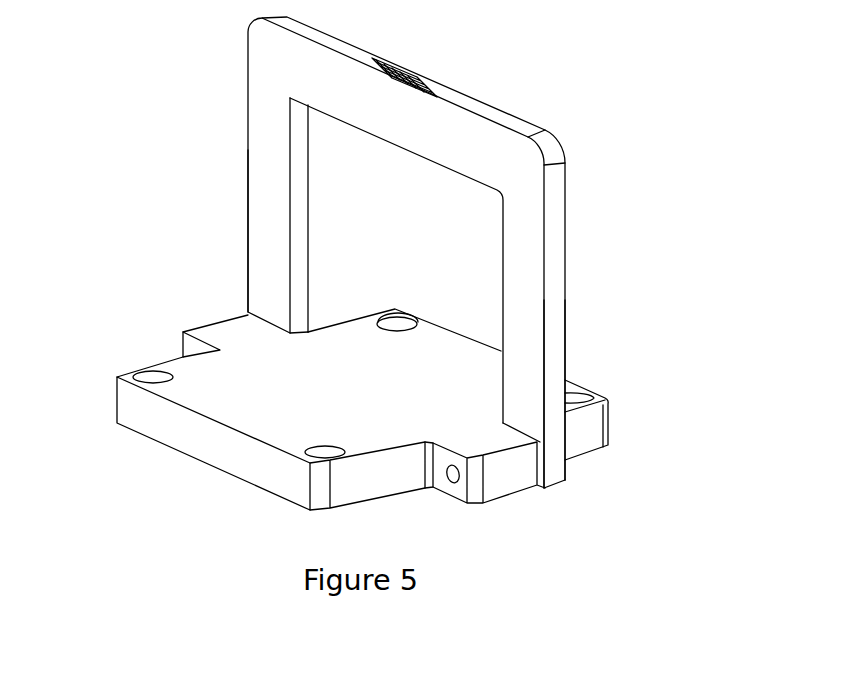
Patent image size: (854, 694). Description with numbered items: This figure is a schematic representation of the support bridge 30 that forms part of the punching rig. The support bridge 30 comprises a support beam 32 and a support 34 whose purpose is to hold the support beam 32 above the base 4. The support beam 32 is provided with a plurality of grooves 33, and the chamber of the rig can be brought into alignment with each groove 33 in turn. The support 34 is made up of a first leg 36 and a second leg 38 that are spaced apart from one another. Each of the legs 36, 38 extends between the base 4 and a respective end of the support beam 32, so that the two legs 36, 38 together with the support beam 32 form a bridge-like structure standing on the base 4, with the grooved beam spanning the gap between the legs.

The base 4 is at (183, 415).
The support bridge 30 is at (379, 248).
The support beam 32 is at (478, 130).
The groove 33 is at (417, 70).
The support 34 is at (297, 215).
The first leg 36 is at (278, 285).
The second leg 38 is at (522, 357).